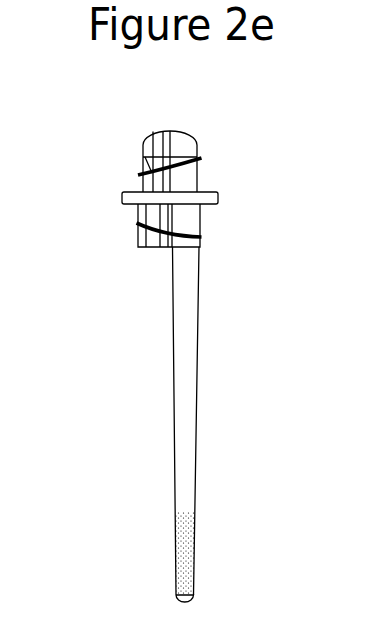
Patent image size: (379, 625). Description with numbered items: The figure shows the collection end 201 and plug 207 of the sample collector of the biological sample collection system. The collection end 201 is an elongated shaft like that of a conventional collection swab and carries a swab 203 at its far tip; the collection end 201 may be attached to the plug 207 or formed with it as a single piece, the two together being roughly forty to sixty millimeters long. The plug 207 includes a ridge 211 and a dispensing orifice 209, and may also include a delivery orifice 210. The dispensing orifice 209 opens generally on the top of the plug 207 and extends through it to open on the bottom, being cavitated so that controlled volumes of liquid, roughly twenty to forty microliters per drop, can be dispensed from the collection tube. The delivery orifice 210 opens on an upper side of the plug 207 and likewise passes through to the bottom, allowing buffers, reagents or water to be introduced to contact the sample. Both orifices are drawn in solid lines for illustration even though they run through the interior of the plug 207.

The collection end 201 is at (239, 399).
The swab 203 is at (258, 557).
The plug 207 is at (240, 174).
The dispensing orifice 209 is at (148, 244).
The delivery orifice 210 is at (109, 229).
The ridge 211 is at (232, 182).